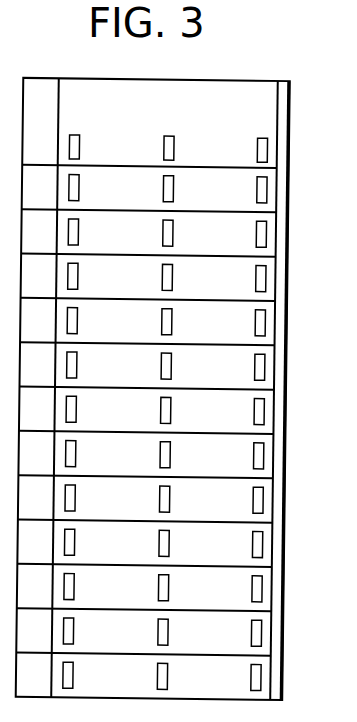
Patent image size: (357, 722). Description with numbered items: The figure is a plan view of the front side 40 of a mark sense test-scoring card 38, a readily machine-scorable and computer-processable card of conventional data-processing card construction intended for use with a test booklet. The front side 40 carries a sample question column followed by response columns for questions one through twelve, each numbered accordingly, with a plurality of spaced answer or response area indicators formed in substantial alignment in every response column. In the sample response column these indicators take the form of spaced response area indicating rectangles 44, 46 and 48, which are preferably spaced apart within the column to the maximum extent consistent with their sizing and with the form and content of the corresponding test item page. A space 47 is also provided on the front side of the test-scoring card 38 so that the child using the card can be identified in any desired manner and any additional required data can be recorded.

The mark sense test-scoring card 38 is at (276, 420).
The front side of the test-scoring card 40 is at (235, 245).
The response area indicating rectangle 44 is at (77, 152).
The response area indicating rectangle 46 is at (171, 152).
The identification space 47 is at (180, 110).
The response area indicating rectangle 48 is at (265, 150).